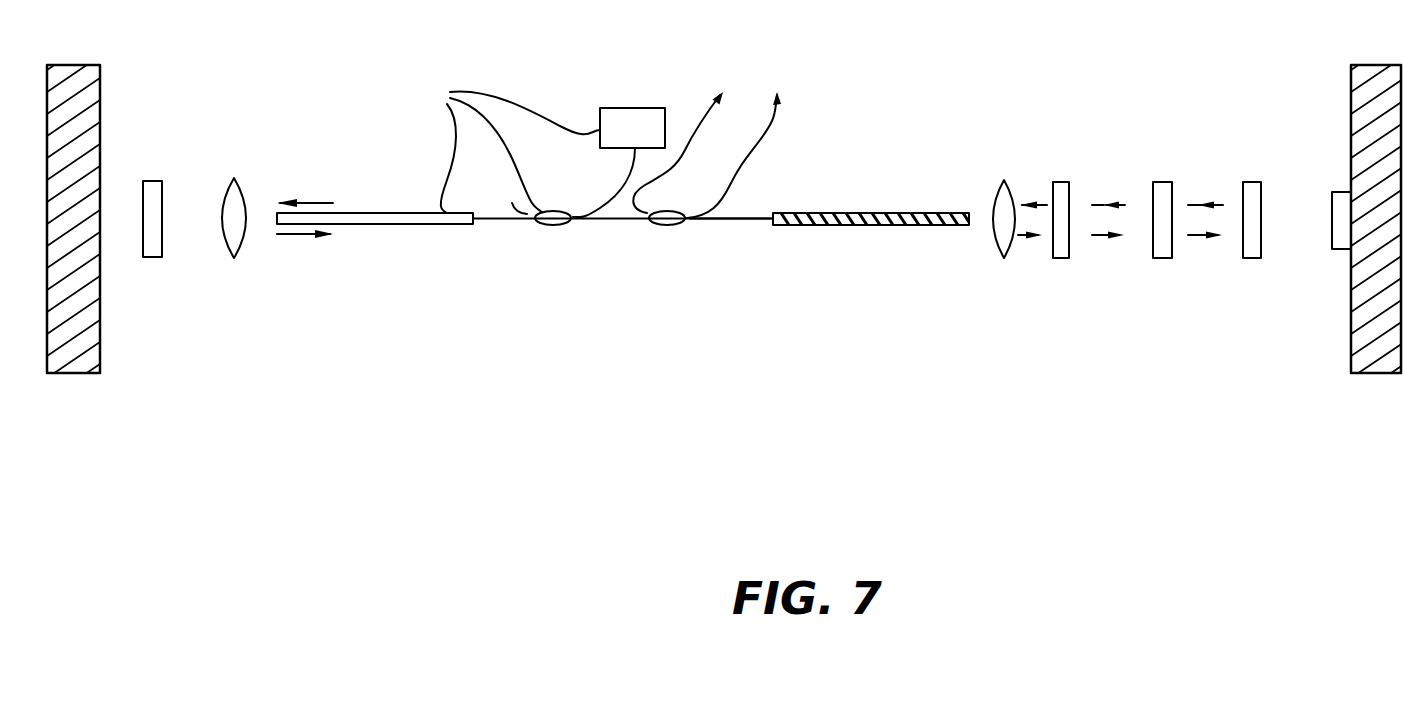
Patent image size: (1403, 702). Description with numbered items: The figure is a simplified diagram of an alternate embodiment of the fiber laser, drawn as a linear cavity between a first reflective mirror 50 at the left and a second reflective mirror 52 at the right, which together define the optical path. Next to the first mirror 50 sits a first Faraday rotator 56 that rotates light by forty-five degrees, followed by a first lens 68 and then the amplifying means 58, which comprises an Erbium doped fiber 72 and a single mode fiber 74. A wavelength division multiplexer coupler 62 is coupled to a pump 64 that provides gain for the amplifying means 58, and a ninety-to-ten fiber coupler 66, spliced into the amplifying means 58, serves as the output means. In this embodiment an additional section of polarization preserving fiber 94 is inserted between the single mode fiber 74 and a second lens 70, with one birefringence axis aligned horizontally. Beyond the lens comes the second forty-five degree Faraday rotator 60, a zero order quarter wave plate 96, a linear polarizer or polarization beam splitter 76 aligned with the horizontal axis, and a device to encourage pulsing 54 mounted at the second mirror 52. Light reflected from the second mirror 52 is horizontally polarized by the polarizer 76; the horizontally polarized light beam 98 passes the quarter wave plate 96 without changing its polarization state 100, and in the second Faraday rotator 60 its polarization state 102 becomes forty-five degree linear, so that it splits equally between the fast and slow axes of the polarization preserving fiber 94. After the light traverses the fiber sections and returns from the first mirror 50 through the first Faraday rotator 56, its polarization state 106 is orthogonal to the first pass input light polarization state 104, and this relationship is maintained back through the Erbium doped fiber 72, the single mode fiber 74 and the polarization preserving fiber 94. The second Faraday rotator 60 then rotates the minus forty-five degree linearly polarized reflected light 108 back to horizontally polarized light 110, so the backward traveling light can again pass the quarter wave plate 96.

The first reflective mirror 50 is at (101, 343).
The second reflective mirror 52 is at (1351, 337).
The device to encourage pulsing 54 is at (1332, 205).
The first Faraday rotator 56 is at (152, 257).
The amplifying means 58 is at (507, 148).
The second 45 degree Faraday rotator 60 is at (1061, 258).
The wavelength division multiplexer coupler 62 is at (560, 225).
The pump 64 is at (652, 108).
The fiber coupler 66 is at (670, 225).
The first lens 68 is at (231, 182).
The second lens 70 is at (998, 188).
The Erbium doped fiber 72 is at (418, 225).
The single mode fiber 74 is at (743, 220).
The linear polarizer or polarization beam splitter 76 is at (1252, 258).
The polarization preserving fiber 94 is at (840, 213).
The zero order quarter wave plate 96 is at (1162, 258).
The horizontally polarized light beam 98 is at (1222, 205).
The polarization state 100 is at (1123, 205).
The polarization state 102 is at (1043, 205).
The first pass input light polarization state 104 is at (307, 203).
The polarization state 106 is at (302, 235).
The reflected light 108 is at (1021, 238).
The horizontally polarized light 110 is at (1103, 237).